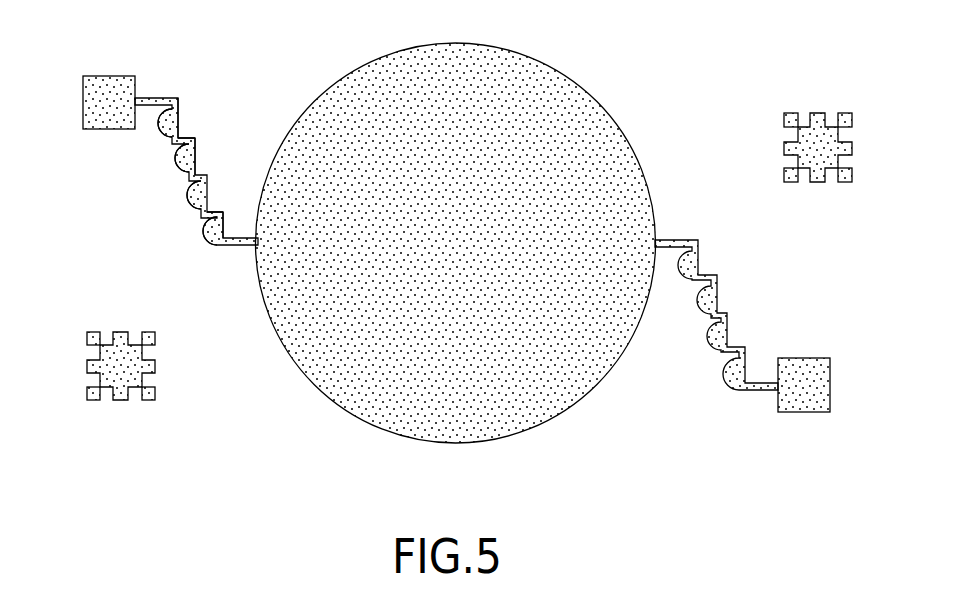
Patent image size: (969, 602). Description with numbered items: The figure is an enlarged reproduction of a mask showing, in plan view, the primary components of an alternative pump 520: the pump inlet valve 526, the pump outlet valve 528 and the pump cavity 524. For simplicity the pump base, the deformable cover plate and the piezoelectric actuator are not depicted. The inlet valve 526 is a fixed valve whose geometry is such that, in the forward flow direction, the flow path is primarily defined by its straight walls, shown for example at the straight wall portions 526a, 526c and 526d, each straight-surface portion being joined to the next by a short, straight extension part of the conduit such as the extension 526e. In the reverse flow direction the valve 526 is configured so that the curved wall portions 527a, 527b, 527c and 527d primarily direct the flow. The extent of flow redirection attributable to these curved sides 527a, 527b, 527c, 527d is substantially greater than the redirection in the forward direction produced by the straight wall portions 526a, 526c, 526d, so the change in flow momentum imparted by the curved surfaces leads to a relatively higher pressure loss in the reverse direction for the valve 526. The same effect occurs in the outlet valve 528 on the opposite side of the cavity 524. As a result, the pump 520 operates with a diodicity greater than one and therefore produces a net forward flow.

The pump 520 is at (628, 93).
The pump cavity 524 is at (538, 425).
The pump inlet valve 526 is at (240, 115).
The straight wall portion 526a is at (178, 110).
The straight wall portion 526c is at (213, 192).
The straight wall portion 526d is at (242, 157).
The straight extension part 526e is at (187, 136).
The curved wall portion 527a is at (207, 236).
The curved wall portion 527b is at (193, 186).
The curved wall portion 527c is at (177, 163).
The curved wall portion 527d is at (170, 134).
The pump outlet valve 528 is at (750, 305).